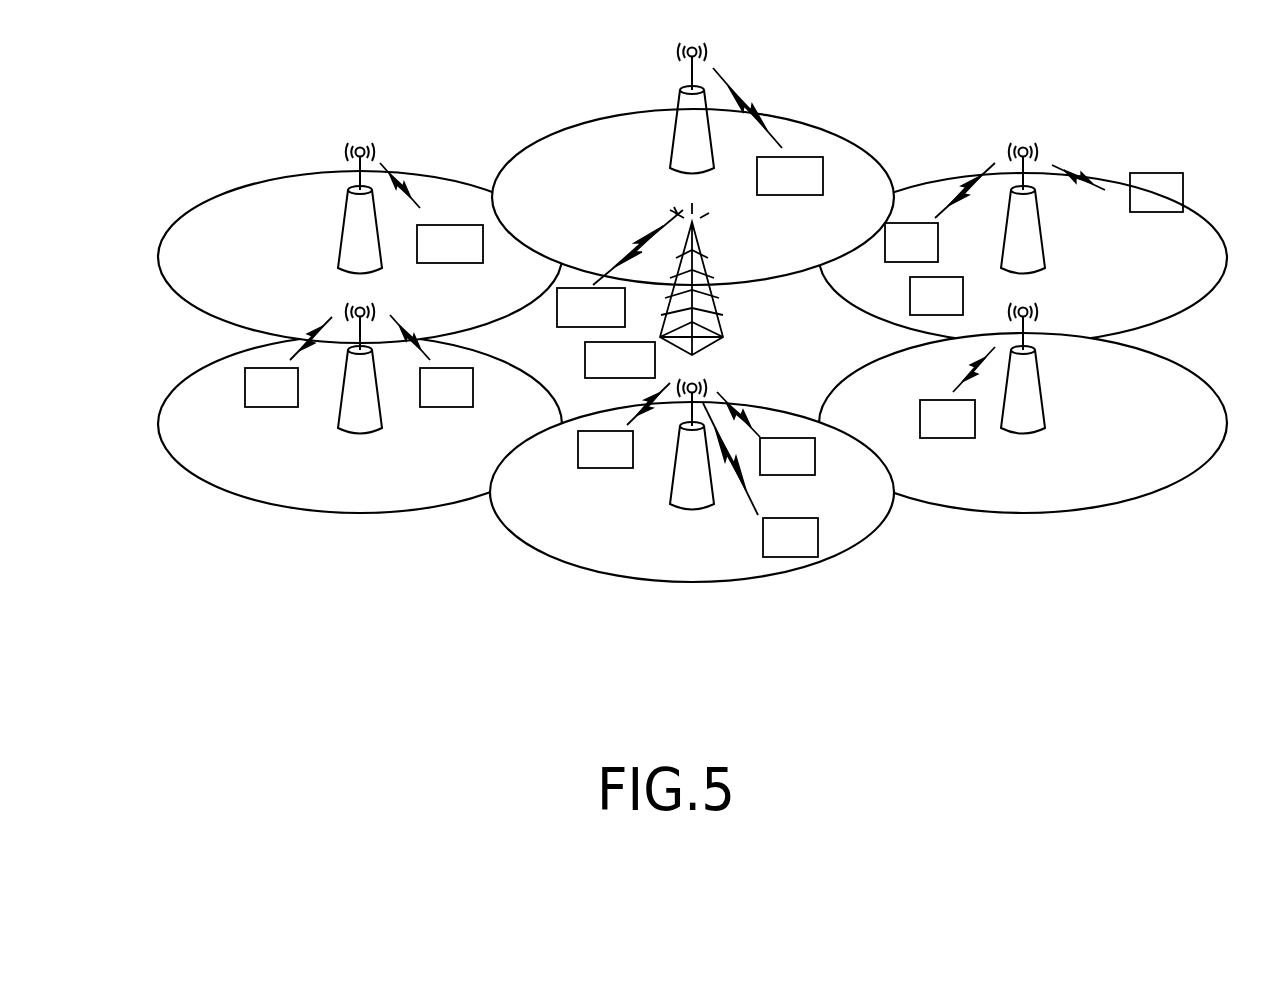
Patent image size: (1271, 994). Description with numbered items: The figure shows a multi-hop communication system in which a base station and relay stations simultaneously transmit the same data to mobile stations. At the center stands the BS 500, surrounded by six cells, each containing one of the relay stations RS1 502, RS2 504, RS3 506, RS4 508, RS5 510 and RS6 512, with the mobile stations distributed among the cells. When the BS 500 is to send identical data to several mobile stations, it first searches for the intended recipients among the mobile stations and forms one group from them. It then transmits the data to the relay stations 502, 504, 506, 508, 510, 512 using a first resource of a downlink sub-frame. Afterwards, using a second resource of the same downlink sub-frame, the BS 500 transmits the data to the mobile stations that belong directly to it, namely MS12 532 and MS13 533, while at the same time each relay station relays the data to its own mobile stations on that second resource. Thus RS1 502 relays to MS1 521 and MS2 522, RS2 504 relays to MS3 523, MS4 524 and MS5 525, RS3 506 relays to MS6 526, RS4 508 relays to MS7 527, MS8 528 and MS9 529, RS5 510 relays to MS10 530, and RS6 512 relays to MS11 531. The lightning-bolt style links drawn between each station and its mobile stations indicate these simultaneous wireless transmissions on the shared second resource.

The base station (BS) 500 is at (718, 289).
The relay station RS1 502 is at (359, 402).
The relay station RS2 504 is at (691, 475).
The relay station RS3 506 is at (1025, 401).
The relay station RS4 508 is at (1051, 223).
The relay station RS5 510 is at (655, 117).
The relay station RS6 512 is at (331, 223).
The mobile station MS1 521 is at (271, 407).
The mobile station MS2 522 is at (447, 407).
The mobile station MS3 523 is at (605, 468).
The mobile station MS4 524 is at (815, 456).
The mobile station MS5 525 is at (790, 557).
The mobile station MS6 526 is at (945, 438).
The mobile station MS7 527 is at (912, 262).
The mobile station MS8 528 is at (1160, 212).
The mobile station MS9 529 is at (910, 303).
The mobile station MS10 530 is at (790, 195).
The mobile station MS11 531 is at (455, 263).
The mobile station MS12 532 is at (560, 327).
The mobile station MS13 533 is at (590, 378).